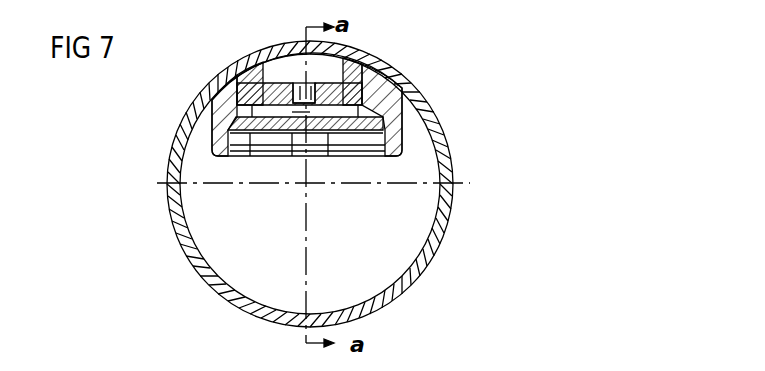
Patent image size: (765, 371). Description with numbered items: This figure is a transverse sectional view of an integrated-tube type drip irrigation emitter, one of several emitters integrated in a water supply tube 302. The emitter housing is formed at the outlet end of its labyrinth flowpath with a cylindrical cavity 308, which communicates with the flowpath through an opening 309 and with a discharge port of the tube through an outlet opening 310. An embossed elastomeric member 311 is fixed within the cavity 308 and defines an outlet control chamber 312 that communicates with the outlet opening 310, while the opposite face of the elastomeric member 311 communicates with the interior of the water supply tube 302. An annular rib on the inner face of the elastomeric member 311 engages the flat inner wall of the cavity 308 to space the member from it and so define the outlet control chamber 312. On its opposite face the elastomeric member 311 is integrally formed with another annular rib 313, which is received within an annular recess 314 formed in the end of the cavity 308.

The water supply tube 302 is at (399, 77).
The cavity 308 is at (228, 116).
The opening 309 is at (245, 101).
The outlet opening 310 is at (309, 84).
The elastomeric member 311 is at (328, 156).
The outlet control chamber 312 is at (238, 78).
The annular rib 313 is at (250, 157).
The annular recess 314 is at (235, 106).